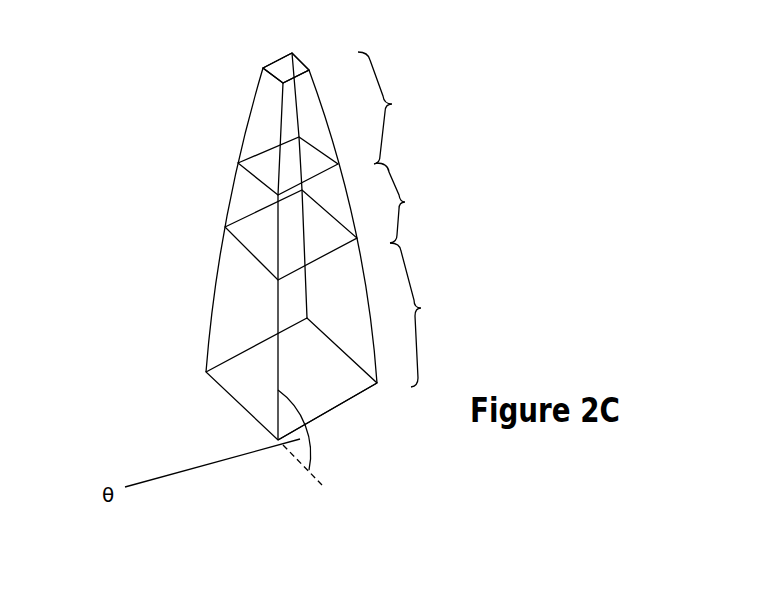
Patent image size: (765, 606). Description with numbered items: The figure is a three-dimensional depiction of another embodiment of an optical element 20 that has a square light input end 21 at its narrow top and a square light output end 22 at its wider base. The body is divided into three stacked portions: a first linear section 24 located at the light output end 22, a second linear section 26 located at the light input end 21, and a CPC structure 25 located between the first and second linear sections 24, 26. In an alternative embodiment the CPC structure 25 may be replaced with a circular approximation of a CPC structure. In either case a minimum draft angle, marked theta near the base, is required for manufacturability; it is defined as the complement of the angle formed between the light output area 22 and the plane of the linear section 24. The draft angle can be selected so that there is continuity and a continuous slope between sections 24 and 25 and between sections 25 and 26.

The optical element 20 is at (210, 112).
The light input end 21 is at (292, 53).
The light output end 22 is at (323, 414).
The first linear section 24 is at (327, 341).
The CPC structure 25 is at (331, 221).
The second linear section 26 is at (333, 123).